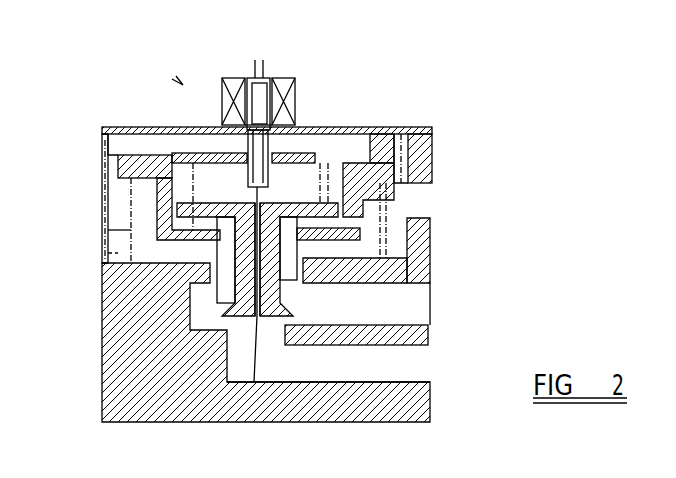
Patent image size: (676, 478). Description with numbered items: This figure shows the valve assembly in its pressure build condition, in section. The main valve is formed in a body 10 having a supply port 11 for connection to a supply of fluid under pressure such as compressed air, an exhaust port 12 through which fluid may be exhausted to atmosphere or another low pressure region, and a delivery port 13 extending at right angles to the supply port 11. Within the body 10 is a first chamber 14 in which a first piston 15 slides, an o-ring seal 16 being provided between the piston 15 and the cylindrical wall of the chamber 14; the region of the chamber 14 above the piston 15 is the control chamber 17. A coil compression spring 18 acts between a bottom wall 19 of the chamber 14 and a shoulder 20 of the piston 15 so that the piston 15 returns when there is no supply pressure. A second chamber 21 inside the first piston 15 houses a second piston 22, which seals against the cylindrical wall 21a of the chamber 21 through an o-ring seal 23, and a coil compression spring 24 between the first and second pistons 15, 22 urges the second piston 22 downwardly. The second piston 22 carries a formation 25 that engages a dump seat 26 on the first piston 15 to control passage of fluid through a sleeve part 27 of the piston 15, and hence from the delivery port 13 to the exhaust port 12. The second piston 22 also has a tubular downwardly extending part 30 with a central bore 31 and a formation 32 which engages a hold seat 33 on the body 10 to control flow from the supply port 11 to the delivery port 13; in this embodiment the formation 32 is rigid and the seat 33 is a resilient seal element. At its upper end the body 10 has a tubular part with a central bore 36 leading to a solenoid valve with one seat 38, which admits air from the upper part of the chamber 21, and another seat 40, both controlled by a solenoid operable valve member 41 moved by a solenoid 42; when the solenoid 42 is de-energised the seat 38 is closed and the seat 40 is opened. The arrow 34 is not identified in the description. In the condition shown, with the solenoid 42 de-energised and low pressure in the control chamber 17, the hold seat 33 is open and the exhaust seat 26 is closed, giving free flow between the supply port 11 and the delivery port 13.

The body 10 is at (101, 146).
The supply port 11 is at (432, 372).
The exhaust port 12 is at (435, 198).
The delivery port 13 is at (436, 299).
The first chamber 14 is at (102, 227).
The first piston 15 is at (110, 132).
The o-ring seal 16 is at (104, 170).
The control chamber 17 is at (152, 143).
The coil compression spring 18 is at (102, 253).
The bottom wall 19 is at (102, 265).
The shoulder 20 is at (102, 198).
The second chamber 21 is at (378, 148).
The cylindrical wall 21a is at (412, 132).
The second piston 22 is at (358, 128).
The o-ring seal 23 is at (345, 210).
The coil compression spring 24 is at (200, 153).
The formation 25 is at (300, 237).
The dump seat 26 is at (303, 268).
The sleeve part 27 is at (295, 292).
The tubular downwardly extending part 30 is at (245, 292).
The central bore 31 is at (253, 422).
The formation 32 is at (230, 320).
The hold seat 33 is at (245, 292).
The direction arrow 34 is at (183, 85).
The central bore 36 is at (263, 148).
The seat 38 is at (280, 125).
The seat 40 is at (268, 77).
The solenoid operable valve member 41 is at (248, 82).
The solenoid 42 is at (222, 95).